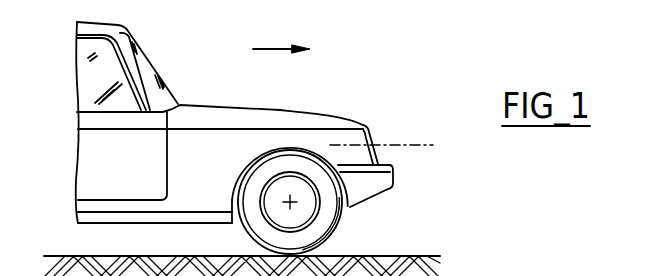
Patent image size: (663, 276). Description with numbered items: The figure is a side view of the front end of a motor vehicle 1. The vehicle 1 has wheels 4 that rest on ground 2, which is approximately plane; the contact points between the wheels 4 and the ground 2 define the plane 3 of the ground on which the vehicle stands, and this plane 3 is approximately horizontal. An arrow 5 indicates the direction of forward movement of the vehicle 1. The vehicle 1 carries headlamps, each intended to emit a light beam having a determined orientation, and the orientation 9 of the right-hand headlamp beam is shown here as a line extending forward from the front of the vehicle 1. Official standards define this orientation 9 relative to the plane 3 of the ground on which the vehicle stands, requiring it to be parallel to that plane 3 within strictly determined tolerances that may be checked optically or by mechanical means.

The motor vehicle 1 is at (181, 59).
The ground 2 is at (428, 266).
The plane of the ground 3 is at (388, 255).
The wheels 4 is at (322, 221).
The direction of forward movement 5 is at (273, 48).
The orientation of light beam 9 is at (433, 145).